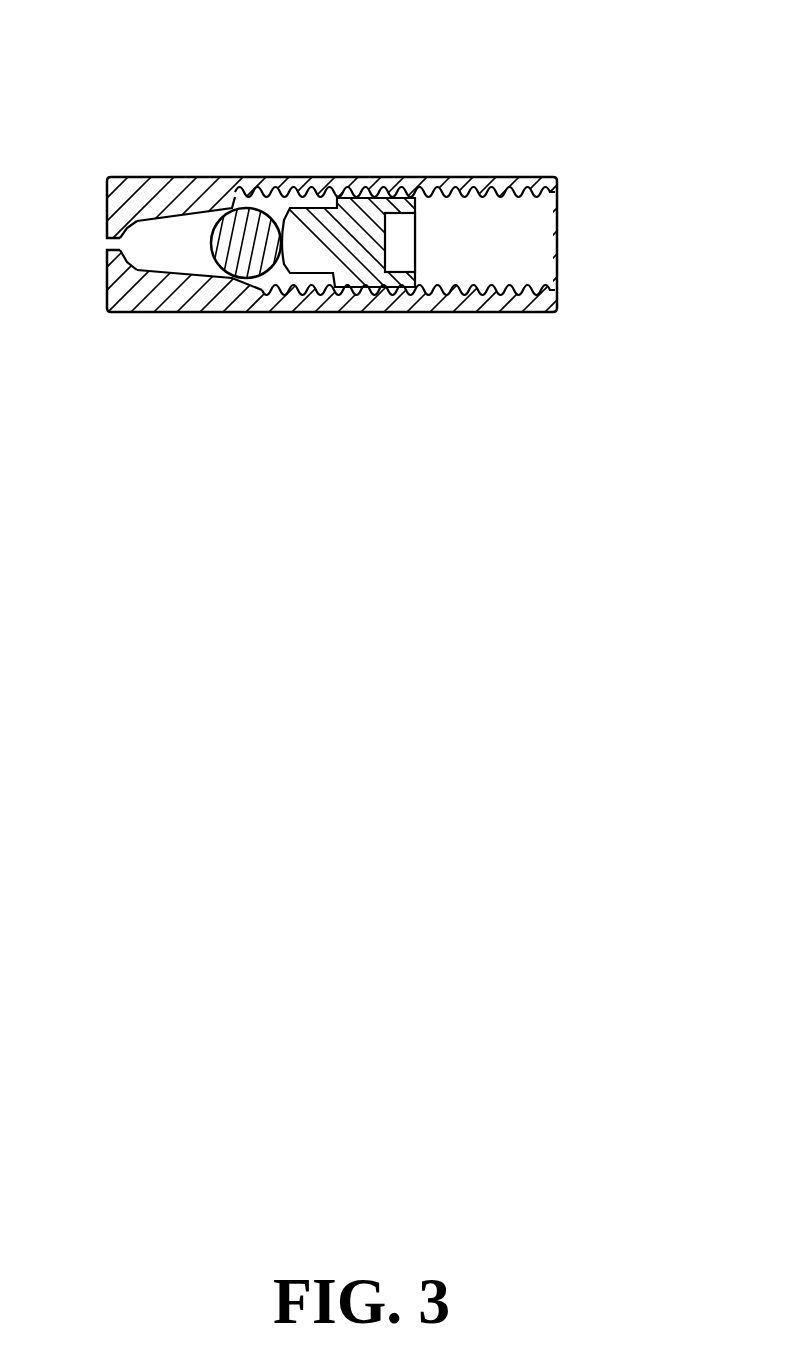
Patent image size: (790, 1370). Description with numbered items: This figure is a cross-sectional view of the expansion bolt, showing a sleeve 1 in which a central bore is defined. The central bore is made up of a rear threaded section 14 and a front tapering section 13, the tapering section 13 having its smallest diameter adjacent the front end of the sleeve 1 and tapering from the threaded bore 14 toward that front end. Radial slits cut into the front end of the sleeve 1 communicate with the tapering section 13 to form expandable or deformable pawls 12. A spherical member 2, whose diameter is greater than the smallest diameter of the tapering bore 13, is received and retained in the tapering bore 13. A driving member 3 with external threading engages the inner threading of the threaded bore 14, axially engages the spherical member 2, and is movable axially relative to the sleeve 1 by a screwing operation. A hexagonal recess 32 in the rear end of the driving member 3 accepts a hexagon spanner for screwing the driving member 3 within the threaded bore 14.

The sleeve 1 is at (368, 186).
The expandable pawls 12 is at (140, 187).
The tapering section 13 is at (182, 245).
The threaded section 14 is at (473, 283).
The spherical member 2 is at (240, 234).
The driving member 3 is at (362, 240).
The hexagonal recess 32 is at (407, 240).